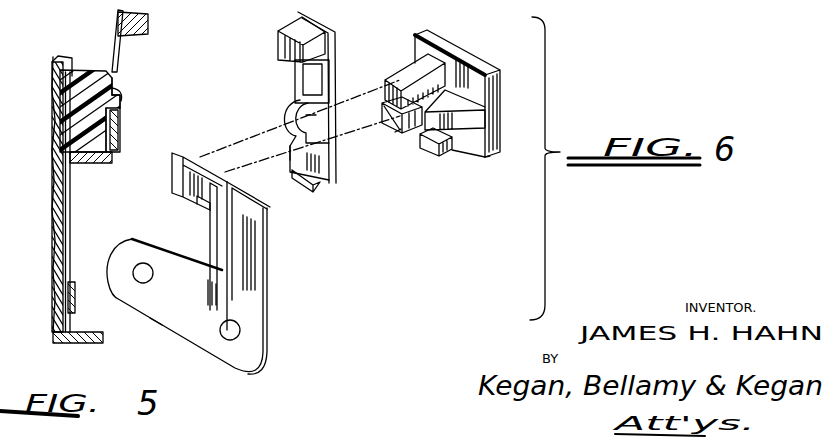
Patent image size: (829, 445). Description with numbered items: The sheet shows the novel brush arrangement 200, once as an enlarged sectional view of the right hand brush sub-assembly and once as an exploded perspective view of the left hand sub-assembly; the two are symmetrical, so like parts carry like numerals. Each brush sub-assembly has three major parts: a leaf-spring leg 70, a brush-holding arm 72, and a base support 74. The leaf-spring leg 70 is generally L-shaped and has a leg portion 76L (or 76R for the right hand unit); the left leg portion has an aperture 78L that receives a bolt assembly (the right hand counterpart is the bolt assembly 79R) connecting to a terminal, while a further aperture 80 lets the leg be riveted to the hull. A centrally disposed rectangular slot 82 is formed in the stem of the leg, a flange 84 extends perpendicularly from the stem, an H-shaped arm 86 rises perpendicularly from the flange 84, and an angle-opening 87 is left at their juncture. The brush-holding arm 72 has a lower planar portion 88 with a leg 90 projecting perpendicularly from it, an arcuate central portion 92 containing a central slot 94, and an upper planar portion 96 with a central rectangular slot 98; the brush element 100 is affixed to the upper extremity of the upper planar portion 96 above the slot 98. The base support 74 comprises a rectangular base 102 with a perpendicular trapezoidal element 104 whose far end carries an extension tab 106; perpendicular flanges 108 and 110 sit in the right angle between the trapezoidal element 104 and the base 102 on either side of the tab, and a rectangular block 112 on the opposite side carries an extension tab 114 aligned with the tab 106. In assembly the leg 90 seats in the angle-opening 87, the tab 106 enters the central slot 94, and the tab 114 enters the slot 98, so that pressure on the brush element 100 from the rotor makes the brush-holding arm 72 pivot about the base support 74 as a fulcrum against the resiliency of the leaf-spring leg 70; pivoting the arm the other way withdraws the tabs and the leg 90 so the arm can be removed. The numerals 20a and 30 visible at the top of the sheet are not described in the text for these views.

In FIG. 6, the housing 20a is at (681, 14).
In FIG. 6, the lamp 30 is at (589, 9).
In FIG. 6, the leaf-spring leg 70 is at (177, 260).
In FIG. 6, the brush-holding arm 72 is at (298, 88).
In FIG. 6, the base support 74 is at (477, 66).
In FIG. 5, the leg portion 76L is at (160, 325).
In FIG. 6, the leg portion 76L is at (238, 21).
In FIG. 6, the leg portion 76R is at (319, 5).
In FIG. 6, the aperture 78L is at (136, 268).
In FIG. 5, the bolt assembly 79R is at (75, 300).
In FIG. 6, the aperture 80 is at (233, 330).
In FIG. 6, the rectangular slot 82 is at (237, 258).
In FIG. 6, the flange 84 is at (247, 198).
In FIG. 6, the H-shaped arm 86 is at (180, 175).
In FIG. 6, the angle-opening 87 is at (198, 200).
In FIG. 6, the lower planar portion 88 is at (330, 168).
In FIG. 5, the leg 90 is at (126, 160).
In FIG. 6, the leg 90 is at (312, 192).
In FIG. 5, the arcuate central portion 92 is at (122, 92).
In FIG. 6, the arcuate central portion 92 is at (287, 108).
In FIG. 6, the central slot 94 is at (297, 116).
In FIG. 5, the upper planar portion 96 is at (117, 38).
In FIG. 6, the upper planar portion 96 is at (337, 78).
In FIG. 6, the central rectangular slot 98 is at (313, 73).
In FIG. 5, the brush element 100 is at (148, 25).
In FIG. 6, the brush element 100 is at (302, 23).
In FIG. 5, the rectangular base 102 is at (68, 58).
In FIG. 6, the rectangular base 102 is at (493, 107).
In FIG. 6, the trapezoidal element 104 is at (458, 148).
In FIG. 5, the extension tab 106 is at (122, 107).
In FIG. 6, the extension tab 106 is at (412, 137).
In FIG. 6, the perpendicular flange 108 is at (432, 143).
In FIG. 6, the perpendicular flange 110 is at (395, 133).
In FIG. 5, the rectangular block 112 is at (103, 63).
In FIG. 6, the rectangular block 112 is at (420, 67).
In FIG. 5, the extension tab 114 is at (114, 80).
In FIG. 6, the extension tab 114 is at (400, 79).
In FIG. 5, the brush arrangement 200 is at (167, 88).
In FIG. 6, the brush arrangement 200 is at (389, 182).